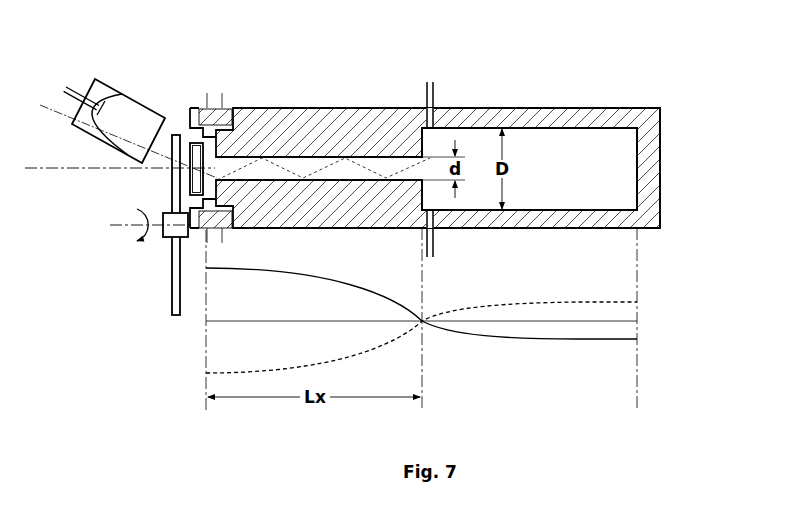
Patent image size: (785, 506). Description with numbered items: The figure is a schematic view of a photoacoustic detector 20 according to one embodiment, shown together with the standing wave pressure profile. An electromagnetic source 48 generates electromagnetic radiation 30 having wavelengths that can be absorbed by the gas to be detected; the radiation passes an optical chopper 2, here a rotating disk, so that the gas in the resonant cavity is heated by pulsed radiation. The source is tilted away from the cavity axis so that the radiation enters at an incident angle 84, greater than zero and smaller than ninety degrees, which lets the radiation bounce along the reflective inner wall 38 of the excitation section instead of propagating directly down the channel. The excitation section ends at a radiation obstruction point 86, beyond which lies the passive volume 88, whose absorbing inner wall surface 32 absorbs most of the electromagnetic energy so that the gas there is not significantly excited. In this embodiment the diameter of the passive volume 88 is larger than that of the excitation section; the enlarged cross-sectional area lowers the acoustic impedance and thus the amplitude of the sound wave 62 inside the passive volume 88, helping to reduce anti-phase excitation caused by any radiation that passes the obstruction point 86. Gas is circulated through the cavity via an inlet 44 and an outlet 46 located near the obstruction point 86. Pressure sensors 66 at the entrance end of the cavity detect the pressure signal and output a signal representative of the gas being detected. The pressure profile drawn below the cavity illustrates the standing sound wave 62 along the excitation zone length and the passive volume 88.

The optical chopper 2 is at (172, 281).
The photoacoustic detector 20 is at (692, 76).
The electromagnetic radiation 30 is at (333, 168).
The absorbing inner wall surface 32 is at (563, 135).
The reflective inner wall 38 is at (317, 161).
The inlet 44 is at (434, 243).
The outlet 46 is at (427, 93).
The electromagnetic source 48 is at (108, 87).
The sound wave 62 is at (573, 340).
The pressure sensor 66 is at (230, 108).
The incident angle 84 is at (41, 107).
The radiation obstruction point 86 is at (422, 157).
The passive volume 88 is at (613, 172).